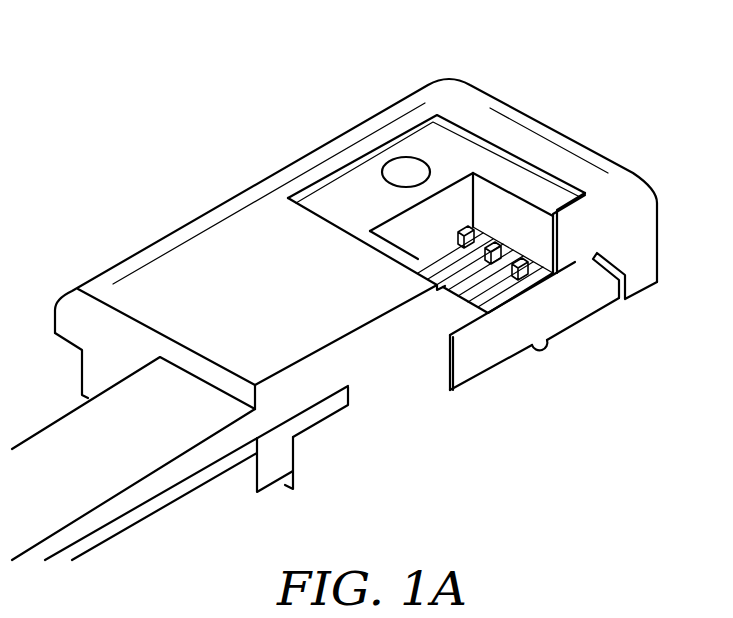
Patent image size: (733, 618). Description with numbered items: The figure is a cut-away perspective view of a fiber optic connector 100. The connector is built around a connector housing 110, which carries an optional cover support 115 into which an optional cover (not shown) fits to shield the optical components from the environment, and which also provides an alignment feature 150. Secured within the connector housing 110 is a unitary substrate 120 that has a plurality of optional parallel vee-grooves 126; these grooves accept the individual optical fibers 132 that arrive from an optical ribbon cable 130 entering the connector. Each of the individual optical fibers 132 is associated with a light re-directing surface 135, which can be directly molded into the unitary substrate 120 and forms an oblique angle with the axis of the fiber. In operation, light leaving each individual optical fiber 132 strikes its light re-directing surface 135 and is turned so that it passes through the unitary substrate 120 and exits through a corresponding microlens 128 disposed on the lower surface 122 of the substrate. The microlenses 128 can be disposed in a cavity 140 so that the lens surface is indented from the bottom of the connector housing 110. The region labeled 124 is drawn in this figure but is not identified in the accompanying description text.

The fiber optic connector 100 is at (124, 198).
The connector housing 110 is at (222, 241).
The cover support 115 is at (317, 200).
The unitary substrate 120 is at (480, 352).
The lower surface 122 is at (607, 303).
The housing end wall 124 is at (543, 250).
The parallel vee-grooves 126 is at (483, 232).
The microlens 128 is at (545, 336).
The optical ribbon cable 130 is at (148, 517).
The individual optical fibers 132 is at (433, 260).
The light re-directing surface 135 is at (513, 267).
The cavity 140 is at (548, 375).
The alignment feature 150 is at (402, 168).